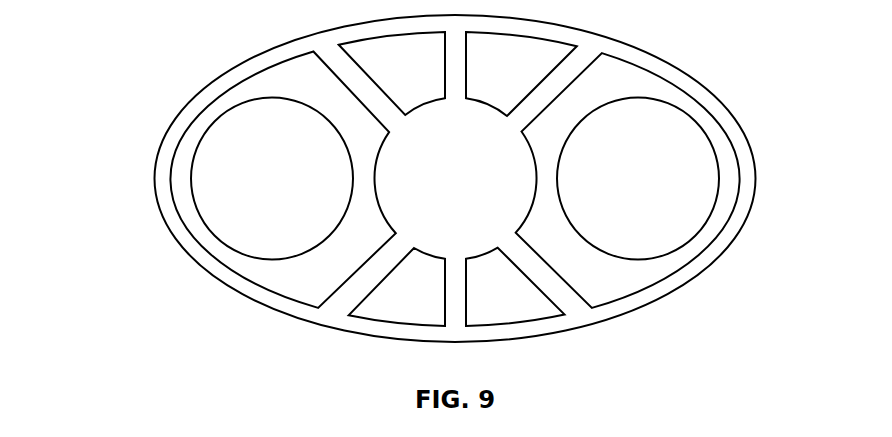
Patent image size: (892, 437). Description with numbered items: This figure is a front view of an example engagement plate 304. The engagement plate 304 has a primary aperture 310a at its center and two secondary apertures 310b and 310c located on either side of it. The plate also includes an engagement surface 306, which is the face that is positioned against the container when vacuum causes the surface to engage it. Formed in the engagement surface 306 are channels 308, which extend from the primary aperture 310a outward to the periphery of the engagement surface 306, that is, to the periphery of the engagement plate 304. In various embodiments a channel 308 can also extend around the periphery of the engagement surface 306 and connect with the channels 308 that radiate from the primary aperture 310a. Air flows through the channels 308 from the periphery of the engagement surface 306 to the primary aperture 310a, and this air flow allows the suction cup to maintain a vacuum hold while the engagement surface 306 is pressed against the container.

The engagement plate 304 is at (118, 56).
The engagement surface 306 is at (298, 276).
The channels 308 is at (737, 142).
The primary aperture 310a is at (462, 237).
The secondary aperture 310b is at (217, 182).
The secondary aperture 310c is at (653, 213).